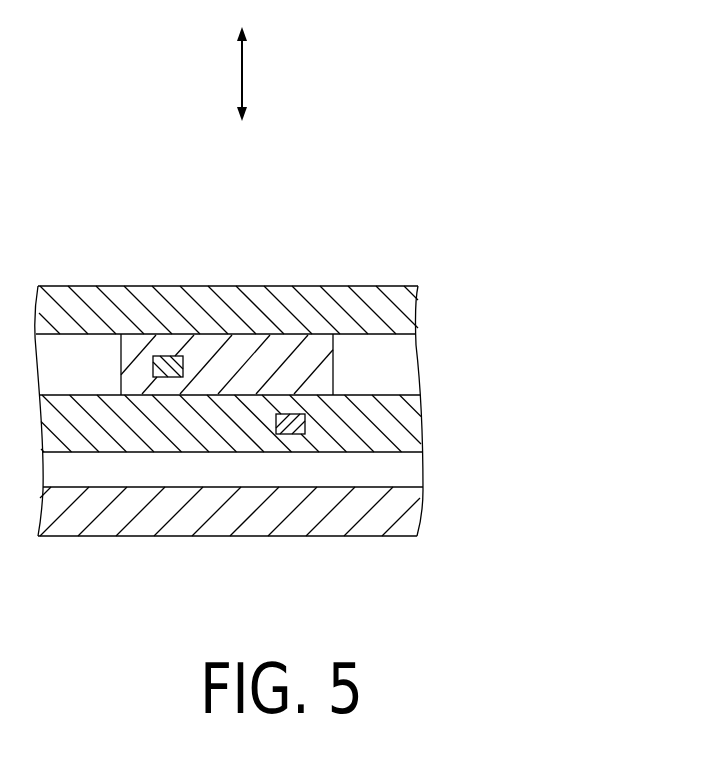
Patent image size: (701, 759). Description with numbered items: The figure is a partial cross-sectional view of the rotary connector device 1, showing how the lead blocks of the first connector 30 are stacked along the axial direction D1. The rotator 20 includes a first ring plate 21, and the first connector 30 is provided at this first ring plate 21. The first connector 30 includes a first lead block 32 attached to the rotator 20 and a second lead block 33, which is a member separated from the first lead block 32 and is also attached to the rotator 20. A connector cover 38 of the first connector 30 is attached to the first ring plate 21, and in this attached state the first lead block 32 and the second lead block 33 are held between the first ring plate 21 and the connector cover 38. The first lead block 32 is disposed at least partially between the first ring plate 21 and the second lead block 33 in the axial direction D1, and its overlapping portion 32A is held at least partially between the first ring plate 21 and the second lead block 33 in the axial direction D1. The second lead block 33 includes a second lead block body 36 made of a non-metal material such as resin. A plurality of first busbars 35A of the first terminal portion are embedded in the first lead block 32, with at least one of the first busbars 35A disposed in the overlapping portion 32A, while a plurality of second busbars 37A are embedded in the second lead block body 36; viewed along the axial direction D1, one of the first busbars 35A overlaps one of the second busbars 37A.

The rotary connector device 1 is at (477, 197).
The axial direction D1 is at (243, 73).
The rotator 20 is at (238, 261).
The first ring plate 21 is at (323, 307).
The first connector 30 is at (288, 401).
The first lead block 32 is at (207, 295).
The overlapping portion 32A is at (253, 368).
The second lead block 33 is at (275, 501).
The first busbars 35A is at (167, 364).
The second lead block body 36 is at (189, 425).
The second busbars 37A is at (290, 432).
The connector cover 38 is at (300, 523).